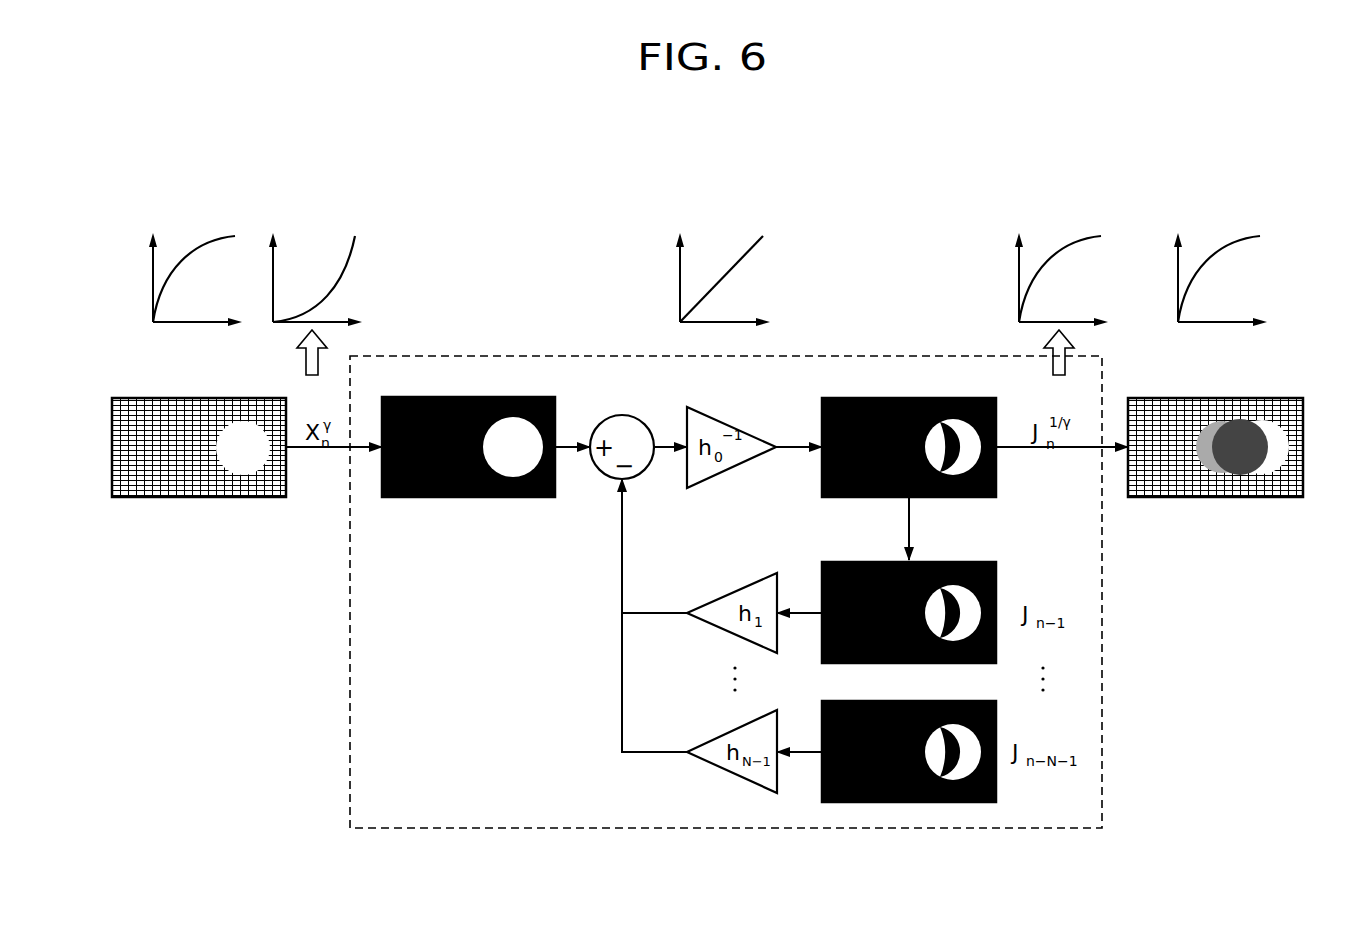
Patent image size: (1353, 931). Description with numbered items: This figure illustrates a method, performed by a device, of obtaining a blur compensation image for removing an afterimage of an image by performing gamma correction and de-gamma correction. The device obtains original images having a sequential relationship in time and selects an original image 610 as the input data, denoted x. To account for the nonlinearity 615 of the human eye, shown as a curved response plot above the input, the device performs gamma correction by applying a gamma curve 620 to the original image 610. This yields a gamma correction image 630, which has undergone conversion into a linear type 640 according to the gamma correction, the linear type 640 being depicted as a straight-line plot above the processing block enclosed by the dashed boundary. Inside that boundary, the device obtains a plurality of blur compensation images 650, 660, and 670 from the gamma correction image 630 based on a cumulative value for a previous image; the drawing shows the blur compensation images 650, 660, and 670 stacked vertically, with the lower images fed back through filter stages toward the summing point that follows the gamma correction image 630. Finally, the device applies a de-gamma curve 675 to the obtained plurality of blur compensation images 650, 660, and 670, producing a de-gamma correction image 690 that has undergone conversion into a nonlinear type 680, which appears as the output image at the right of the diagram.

The original image 610 is at (213, 398).
The nonlinearity of the eye of a human 615 is at (153, 278).
The gamma curve 620 is at (340, 282).
The gamma correction image 630 is at (482, 397).
The linear type 640 is at (767, 282).
The blur compensation image 650 is at (927, 398).
The blur compensation image 660 is at (922, 562).
The blur compensation image 670 is at (922, 701).
The de-gamma curve 675 is at (1019, 278).
The nonlinear type 680 is at (1245, 282).
The de-gamma correction image 690 is at (1230, 398).